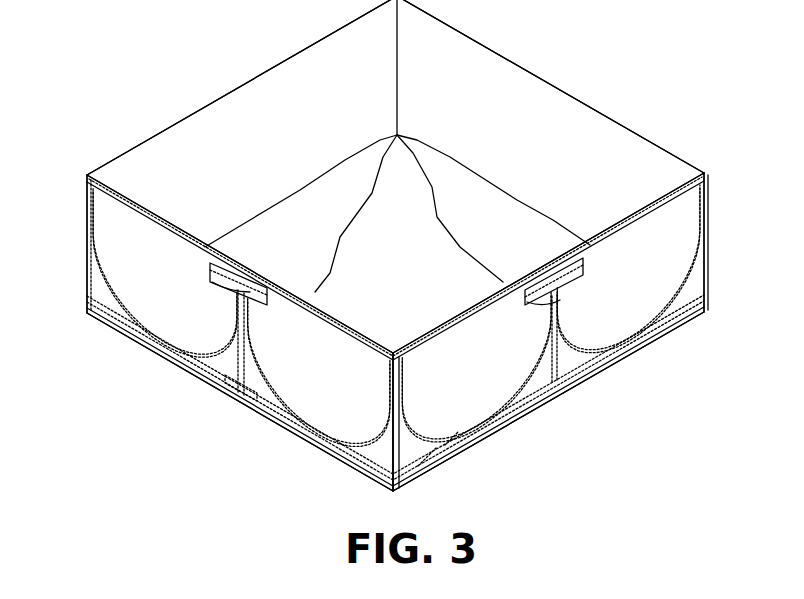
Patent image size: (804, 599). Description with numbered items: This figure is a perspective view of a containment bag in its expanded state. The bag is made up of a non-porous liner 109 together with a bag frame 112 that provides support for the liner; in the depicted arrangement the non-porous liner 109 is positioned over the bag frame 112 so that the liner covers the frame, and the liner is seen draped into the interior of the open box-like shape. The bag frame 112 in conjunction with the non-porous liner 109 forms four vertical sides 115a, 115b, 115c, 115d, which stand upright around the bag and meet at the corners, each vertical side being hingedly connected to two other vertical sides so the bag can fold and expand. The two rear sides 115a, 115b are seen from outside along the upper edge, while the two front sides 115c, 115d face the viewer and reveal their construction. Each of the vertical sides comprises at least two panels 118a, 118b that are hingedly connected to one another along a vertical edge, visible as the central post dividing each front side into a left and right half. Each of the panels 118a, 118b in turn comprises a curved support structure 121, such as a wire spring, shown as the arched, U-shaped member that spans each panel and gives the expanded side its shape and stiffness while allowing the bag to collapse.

The non-porous liner 109 is at (297, 62).
The bag frame 112 is at (703, 252).
The vertical side 115a is at (187, 115).
The vertical side 115b is at (537, 78).
The vertical side 115c is at (627, 330).
The vertical side 115d is at (212, 373).
The panel 118a is at (108, 211).
The panel 118b is at (298, 392).
The curved support structure 121 is at (513, 405).